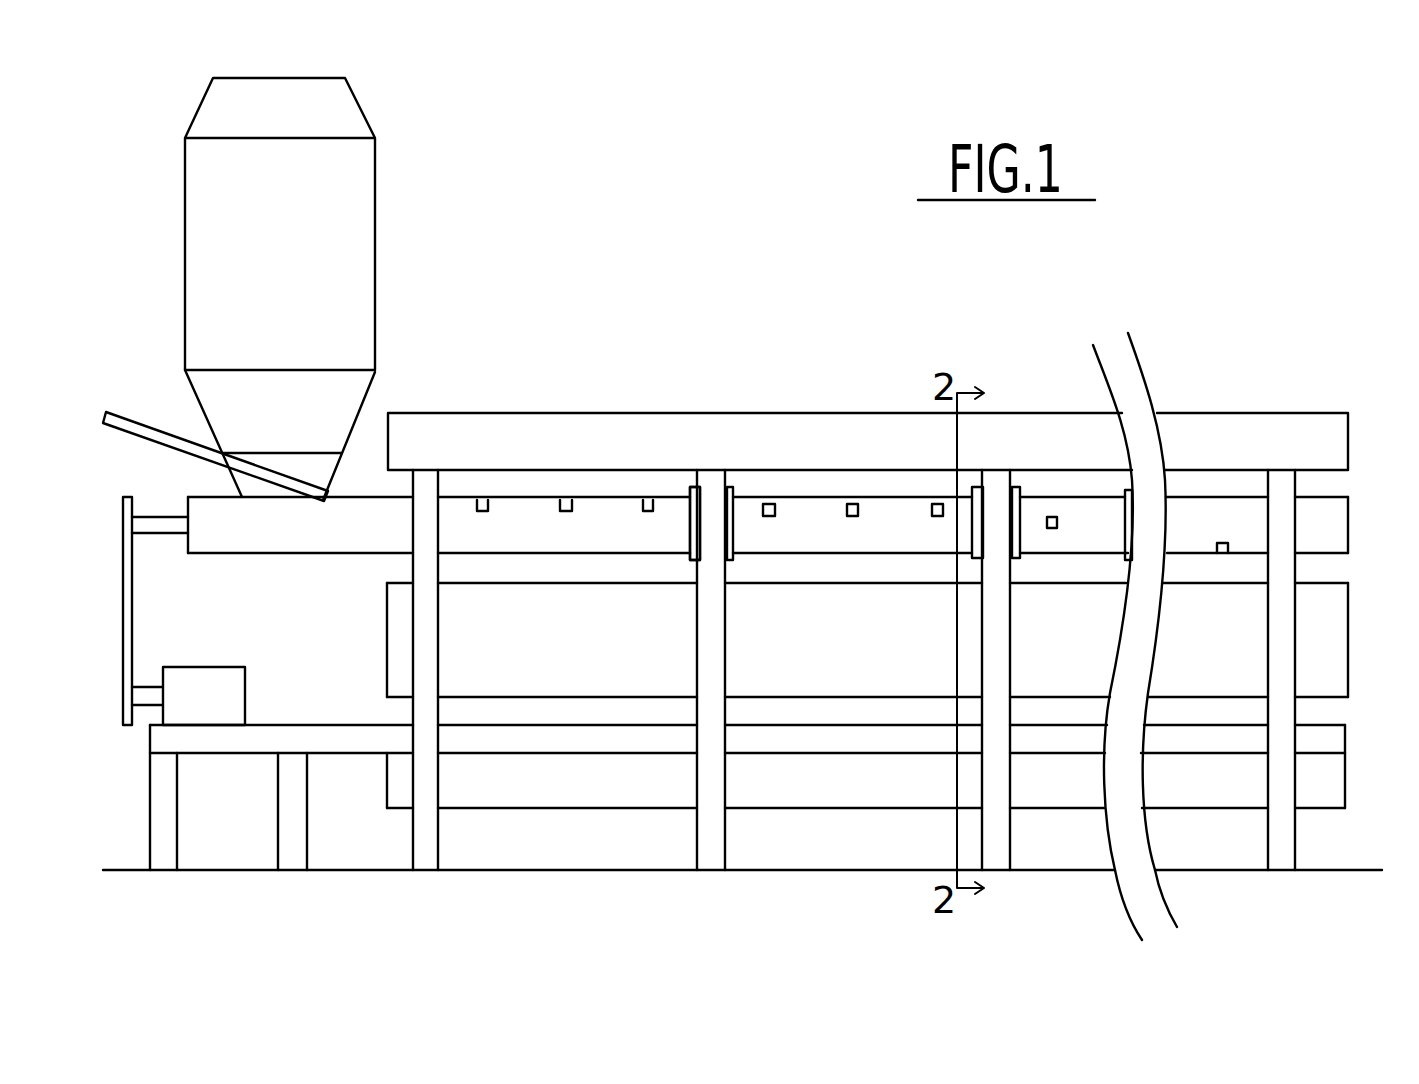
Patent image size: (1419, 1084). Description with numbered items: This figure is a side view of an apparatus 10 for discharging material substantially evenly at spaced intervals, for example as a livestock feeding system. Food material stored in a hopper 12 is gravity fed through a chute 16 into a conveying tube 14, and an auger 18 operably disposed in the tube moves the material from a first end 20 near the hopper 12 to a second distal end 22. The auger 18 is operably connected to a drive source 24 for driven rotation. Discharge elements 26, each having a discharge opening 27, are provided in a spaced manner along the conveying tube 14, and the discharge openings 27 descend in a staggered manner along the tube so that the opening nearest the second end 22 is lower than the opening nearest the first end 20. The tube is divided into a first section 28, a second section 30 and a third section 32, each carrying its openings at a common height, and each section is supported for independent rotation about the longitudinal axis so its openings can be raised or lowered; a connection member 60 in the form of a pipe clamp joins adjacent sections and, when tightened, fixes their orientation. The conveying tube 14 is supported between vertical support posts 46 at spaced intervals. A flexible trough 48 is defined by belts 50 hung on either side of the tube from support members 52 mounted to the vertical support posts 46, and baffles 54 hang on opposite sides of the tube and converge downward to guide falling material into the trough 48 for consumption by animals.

The apparatus 10 is at (716, 221).
The hopper 12 is at (344, 250).
The conveying tube 14 is at (531, 507).
The chute 16 is at (313, 472).
The auger 18 is at (165, 527).
The first end 20 is at (188, 508).
The second distal end 22 is at (1350, 512).
The drive source 24 is at (227, 693).
The discharge elements 26 is at (866, 496).
The discharge opening 27 is at (768, 504).
The first section 28 is at (606, 522).
The second section 30 is at (810, 515).
The third section 32 is at (1060, 518).
The vertical support posts 46 is at (710, 818).
The flexible trough 48 is at (903, 822).
The belts 50 is at (832, 790).
The support members 52 is at (572, 745).
The baffles 54 is at (505, 640).
The connection member 60 is at (693, 513).